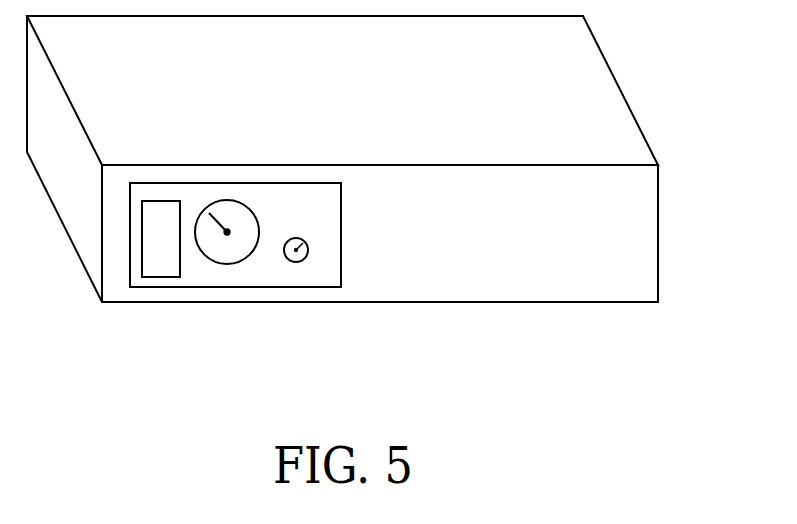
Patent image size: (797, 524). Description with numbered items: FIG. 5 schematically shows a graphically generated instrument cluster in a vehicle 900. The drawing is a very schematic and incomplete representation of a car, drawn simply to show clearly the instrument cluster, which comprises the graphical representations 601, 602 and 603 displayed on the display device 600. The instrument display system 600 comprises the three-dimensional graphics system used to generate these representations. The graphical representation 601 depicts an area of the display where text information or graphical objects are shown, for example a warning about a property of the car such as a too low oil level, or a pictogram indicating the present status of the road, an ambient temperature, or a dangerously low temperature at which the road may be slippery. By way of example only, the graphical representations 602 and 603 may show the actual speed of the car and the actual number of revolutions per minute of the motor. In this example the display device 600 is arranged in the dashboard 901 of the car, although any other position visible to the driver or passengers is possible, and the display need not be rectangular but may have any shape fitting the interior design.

The instrument display system 600 is at (341, 212).
The graphical representation 601 is at (160, 268).
The graphical representation 602 is at (228, 265).
The graphical representation 603 is at (296, 262).
The vehicle 900 is at (684, 222).
The dashboard 901 is at (533, 302).